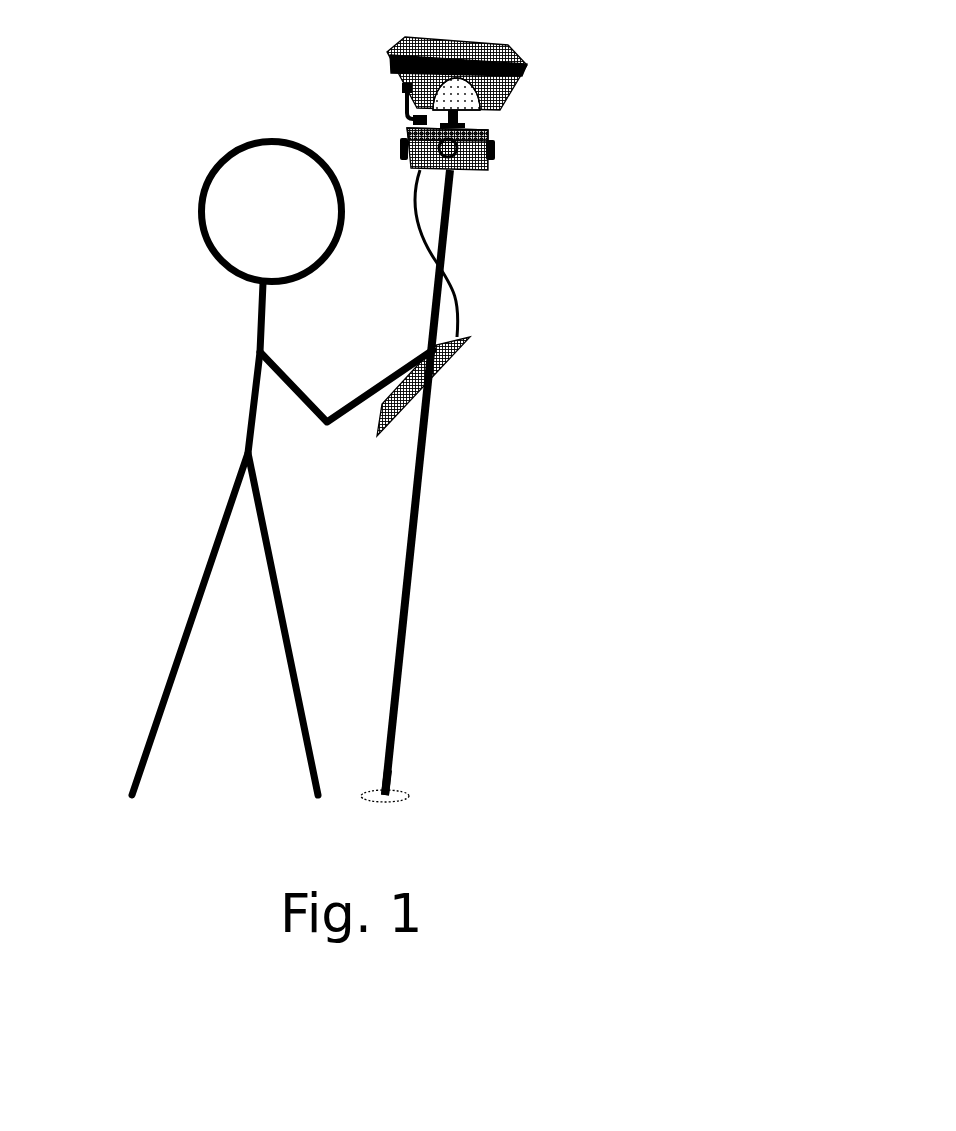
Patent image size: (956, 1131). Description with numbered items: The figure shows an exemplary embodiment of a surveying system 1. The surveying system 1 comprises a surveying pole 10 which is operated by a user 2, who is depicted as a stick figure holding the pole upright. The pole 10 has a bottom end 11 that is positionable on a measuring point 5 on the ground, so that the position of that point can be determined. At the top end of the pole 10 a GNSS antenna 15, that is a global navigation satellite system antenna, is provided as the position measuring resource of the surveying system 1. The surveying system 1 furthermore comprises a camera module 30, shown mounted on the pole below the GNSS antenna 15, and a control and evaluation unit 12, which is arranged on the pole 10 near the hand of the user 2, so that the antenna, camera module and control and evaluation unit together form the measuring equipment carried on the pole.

The surveying system 1 is at (500, 403).
The user 2 is at (136, 215).
The measuring point 5 is at (420, 806).
The surveying pole 10 is at (417, 515).
The bottom end 11 is at (390, 790).
The control and evaluation unit 12 is at (437, 378).
The GNSS antenna 15 is at (371, 37).
The camera module 30 is at (480, 168).